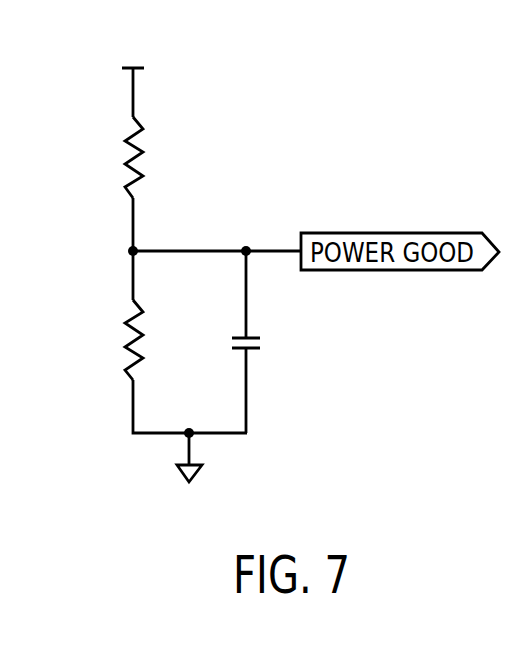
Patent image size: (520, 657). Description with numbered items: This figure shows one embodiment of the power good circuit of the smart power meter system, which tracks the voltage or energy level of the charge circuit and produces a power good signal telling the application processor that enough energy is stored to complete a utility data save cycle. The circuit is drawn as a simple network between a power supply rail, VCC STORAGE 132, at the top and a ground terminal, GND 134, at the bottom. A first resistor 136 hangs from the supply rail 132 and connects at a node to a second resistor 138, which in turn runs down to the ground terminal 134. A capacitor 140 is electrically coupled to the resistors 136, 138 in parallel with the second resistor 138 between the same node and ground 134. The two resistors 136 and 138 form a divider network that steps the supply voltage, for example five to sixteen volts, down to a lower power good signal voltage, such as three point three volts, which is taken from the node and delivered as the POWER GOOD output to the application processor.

The VCC1 STORAGE power supply rail 132 is at (142, 69).
The resistor 136 is at (140, 165).
The resistor 138 is at (137, 348).
The capacitor 140 is at (251, 336).
The ground terminal 134 is at (197, 475).